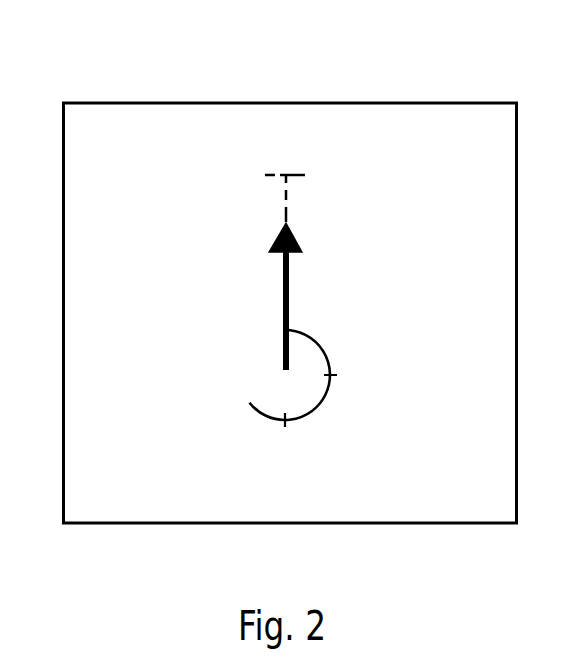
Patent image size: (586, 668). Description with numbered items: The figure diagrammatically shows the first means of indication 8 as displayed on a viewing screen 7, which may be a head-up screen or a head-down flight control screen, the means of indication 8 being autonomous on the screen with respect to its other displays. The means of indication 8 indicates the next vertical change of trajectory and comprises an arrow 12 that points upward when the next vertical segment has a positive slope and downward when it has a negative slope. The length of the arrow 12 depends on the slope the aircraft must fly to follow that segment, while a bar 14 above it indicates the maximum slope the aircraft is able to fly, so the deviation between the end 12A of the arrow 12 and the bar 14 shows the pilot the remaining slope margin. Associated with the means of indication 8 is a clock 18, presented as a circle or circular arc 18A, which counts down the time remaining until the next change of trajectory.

The viewing screen 7 is at (352, 523).
The first means of indication 8 is at (328, 222).
The arrow 12 is at (312, 296).
The end of the arrow 12A is at (260, 230).
The bar 14 is at (247, 175).
The clock 18 is at (330, 423).
The circle 18A is at (324, 348).